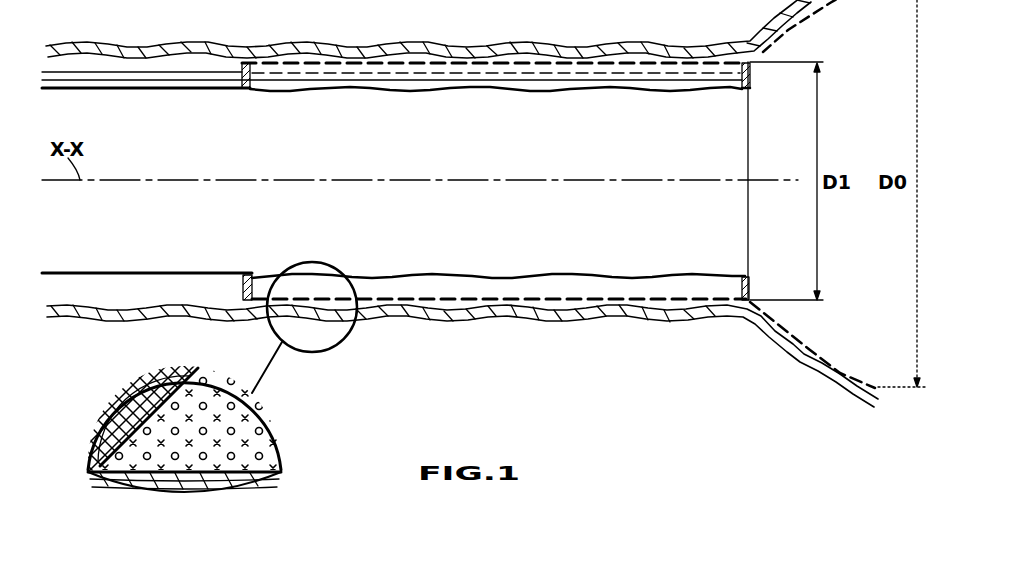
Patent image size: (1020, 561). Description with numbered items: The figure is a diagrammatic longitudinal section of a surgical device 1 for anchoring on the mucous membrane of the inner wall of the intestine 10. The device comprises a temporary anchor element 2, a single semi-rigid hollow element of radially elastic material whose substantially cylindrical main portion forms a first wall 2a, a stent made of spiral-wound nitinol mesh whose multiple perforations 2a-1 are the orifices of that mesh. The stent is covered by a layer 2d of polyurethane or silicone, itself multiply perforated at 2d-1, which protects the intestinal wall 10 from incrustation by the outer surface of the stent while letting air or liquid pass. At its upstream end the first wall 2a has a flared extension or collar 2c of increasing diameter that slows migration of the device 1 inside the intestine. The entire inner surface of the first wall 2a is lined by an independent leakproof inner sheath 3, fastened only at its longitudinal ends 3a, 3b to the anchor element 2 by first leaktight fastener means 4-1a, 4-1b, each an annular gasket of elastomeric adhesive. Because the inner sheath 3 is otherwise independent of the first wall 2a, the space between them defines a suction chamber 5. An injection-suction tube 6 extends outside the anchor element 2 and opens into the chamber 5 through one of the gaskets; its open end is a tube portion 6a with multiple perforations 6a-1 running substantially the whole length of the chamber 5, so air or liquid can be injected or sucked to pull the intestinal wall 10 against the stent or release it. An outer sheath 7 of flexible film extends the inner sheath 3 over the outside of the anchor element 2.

The surgical device 1 is at (838, 272).
The temporary anchor element 2 is at (805, 38).
The first wall 2a is at (650, 52).
The multiple perforations 2a-1 is at (413, 64).
The flared extension (collar) 2c is at (855, 368).
The layer 2d is at (334, 62).
The perforations of the layer 2d-1 is at (460, 62).
The inner sheath 3 is at (475, 91).
The upstream longitudinal end of the inner sheath 3a is at (742, 280).
The downstream longitudinal end of the inner sheath 3b is at (250, 92).
The first leaktight fastener means 4-1a is at (752, 68).
The first leaktight fastener means 4-1b is at (243, 63).
The suction chamber 5 is at (745, 90).
The injection-suction tube 6 is at (148, 72).
The perforated tube portion 6a is at (607, 74).
The multiple perforations of the tube portion 6a-1 is at (570, 74).
The outer sheath 7 is at (117, 272).
The intestine (inner wall) 10 is at (578, 305).